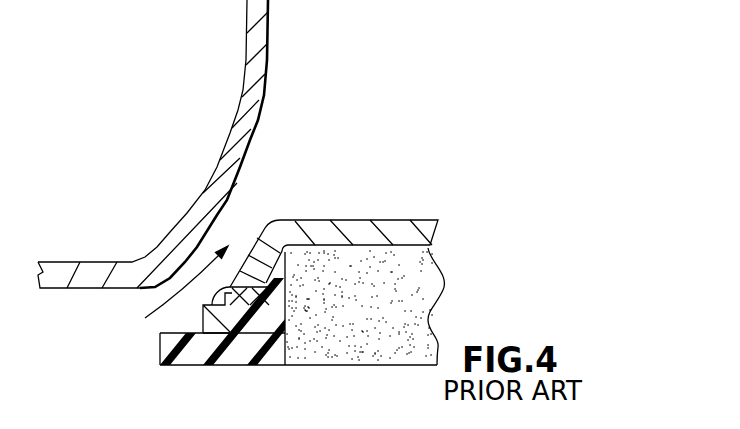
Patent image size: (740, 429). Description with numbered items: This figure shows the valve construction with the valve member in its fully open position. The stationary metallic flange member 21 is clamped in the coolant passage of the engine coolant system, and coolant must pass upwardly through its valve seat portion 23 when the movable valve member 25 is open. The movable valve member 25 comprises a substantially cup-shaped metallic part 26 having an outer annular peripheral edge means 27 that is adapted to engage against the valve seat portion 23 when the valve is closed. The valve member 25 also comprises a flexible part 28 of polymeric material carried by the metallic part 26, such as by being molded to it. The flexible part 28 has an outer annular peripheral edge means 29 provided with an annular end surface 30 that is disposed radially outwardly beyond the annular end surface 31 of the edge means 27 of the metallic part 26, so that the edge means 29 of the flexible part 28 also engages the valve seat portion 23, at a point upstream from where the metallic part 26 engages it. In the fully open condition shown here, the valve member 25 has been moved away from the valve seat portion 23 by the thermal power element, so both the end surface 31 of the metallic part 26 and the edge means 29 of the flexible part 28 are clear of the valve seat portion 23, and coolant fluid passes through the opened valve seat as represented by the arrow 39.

The flange member 21 is at (245, 80).
The valve seat portion 23 is at (182, 262).
The movable valve member 25 is at (400, 220).
The cup-shaped metallic part 26 is at (278, 220).
The outer annular peripheral edge means 27 is at (268, 290).
The flexible part 28 is at (273, 355).
The outer annular peripheral edge means 29 is at (192, 352).
The annular end surface 30 is at (160, 350).
The annular end surface 31 is at (203, 313).
The arrow 39 is at (172, 297).